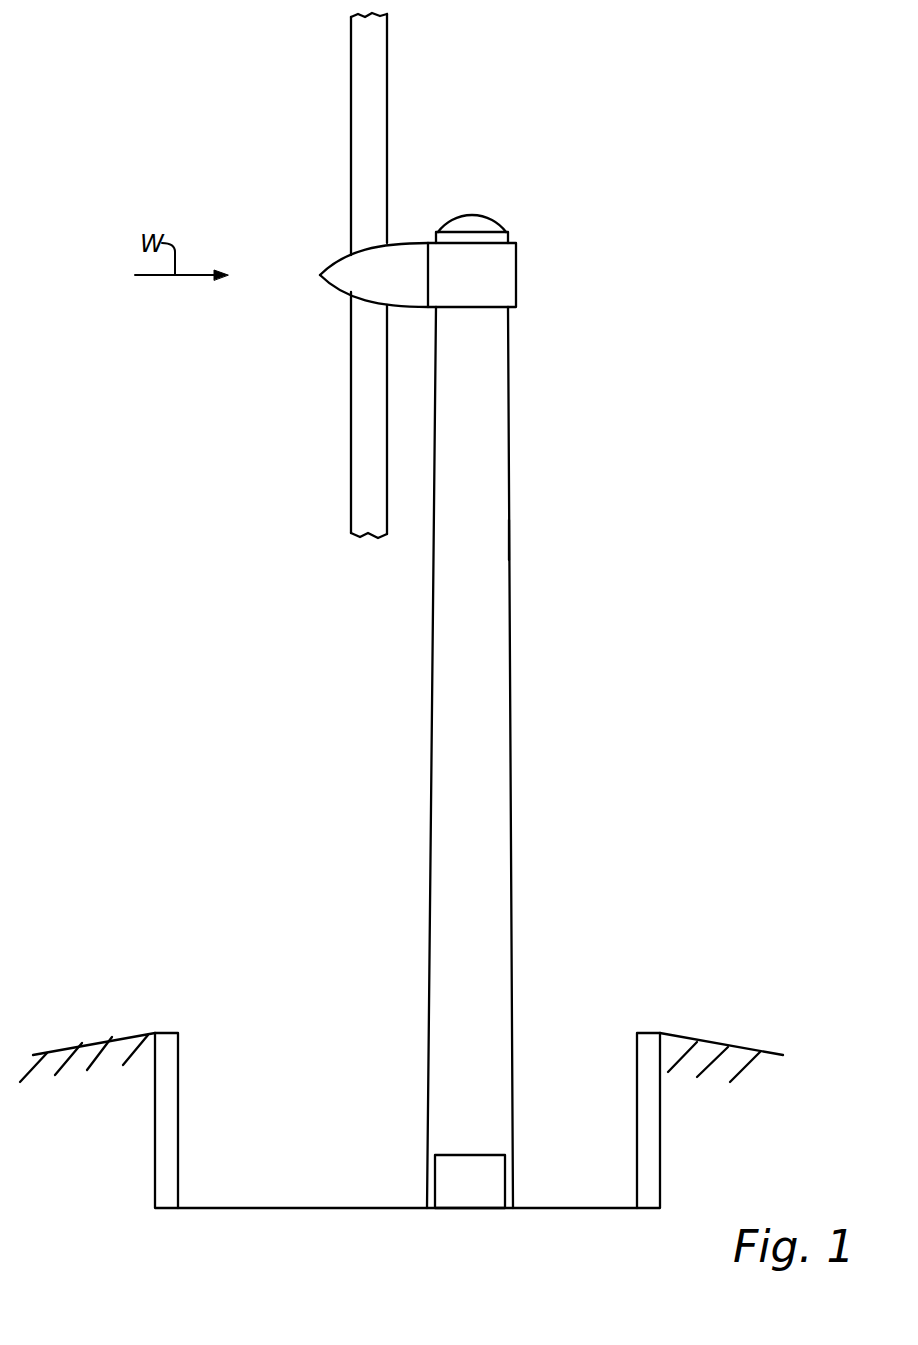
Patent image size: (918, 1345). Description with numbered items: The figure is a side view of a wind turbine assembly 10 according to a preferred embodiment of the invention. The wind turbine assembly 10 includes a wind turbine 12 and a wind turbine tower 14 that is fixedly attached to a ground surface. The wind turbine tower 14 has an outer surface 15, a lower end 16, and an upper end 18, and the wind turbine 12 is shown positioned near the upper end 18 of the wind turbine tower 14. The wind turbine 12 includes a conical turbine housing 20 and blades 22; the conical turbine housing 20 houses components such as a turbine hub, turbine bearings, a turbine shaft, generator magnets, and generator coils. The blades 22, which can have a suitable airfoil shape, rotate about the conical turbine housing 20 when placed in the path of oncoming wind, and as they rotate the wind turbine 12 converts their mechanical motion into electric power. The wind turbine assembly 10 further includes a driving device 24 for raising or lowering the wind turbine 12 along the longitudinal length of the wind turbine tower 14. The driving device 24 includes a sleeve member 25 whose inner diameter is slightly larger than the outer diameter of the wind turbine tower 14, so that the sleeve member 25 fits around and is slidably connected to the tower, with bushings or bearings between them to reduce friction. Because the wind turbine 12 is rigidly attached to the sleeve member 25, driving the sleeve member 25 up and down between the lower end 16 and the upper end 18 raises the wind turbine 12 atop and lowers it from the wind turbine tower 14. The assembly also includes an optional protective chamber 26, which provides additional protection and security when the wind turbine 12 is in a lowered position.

The wind turbine assembly 10 is at (643, 167).
The wind turbine 12 is at (293, 165).
The wind turbine tower 14 is at (488, 680).
The outer surface 15 is at (512, 540).
The lower end 16 is at (513, 1190).
The upper end 18 is at (508, 232).
The conical turbine housing 20 is at (356, 281).
The blades 22 is at (376, 72).
The driving device 24 is at (460, 1175).
The sleeve member 25 is at (485, 271).
The protective chamber 26 is at (217, 1052).